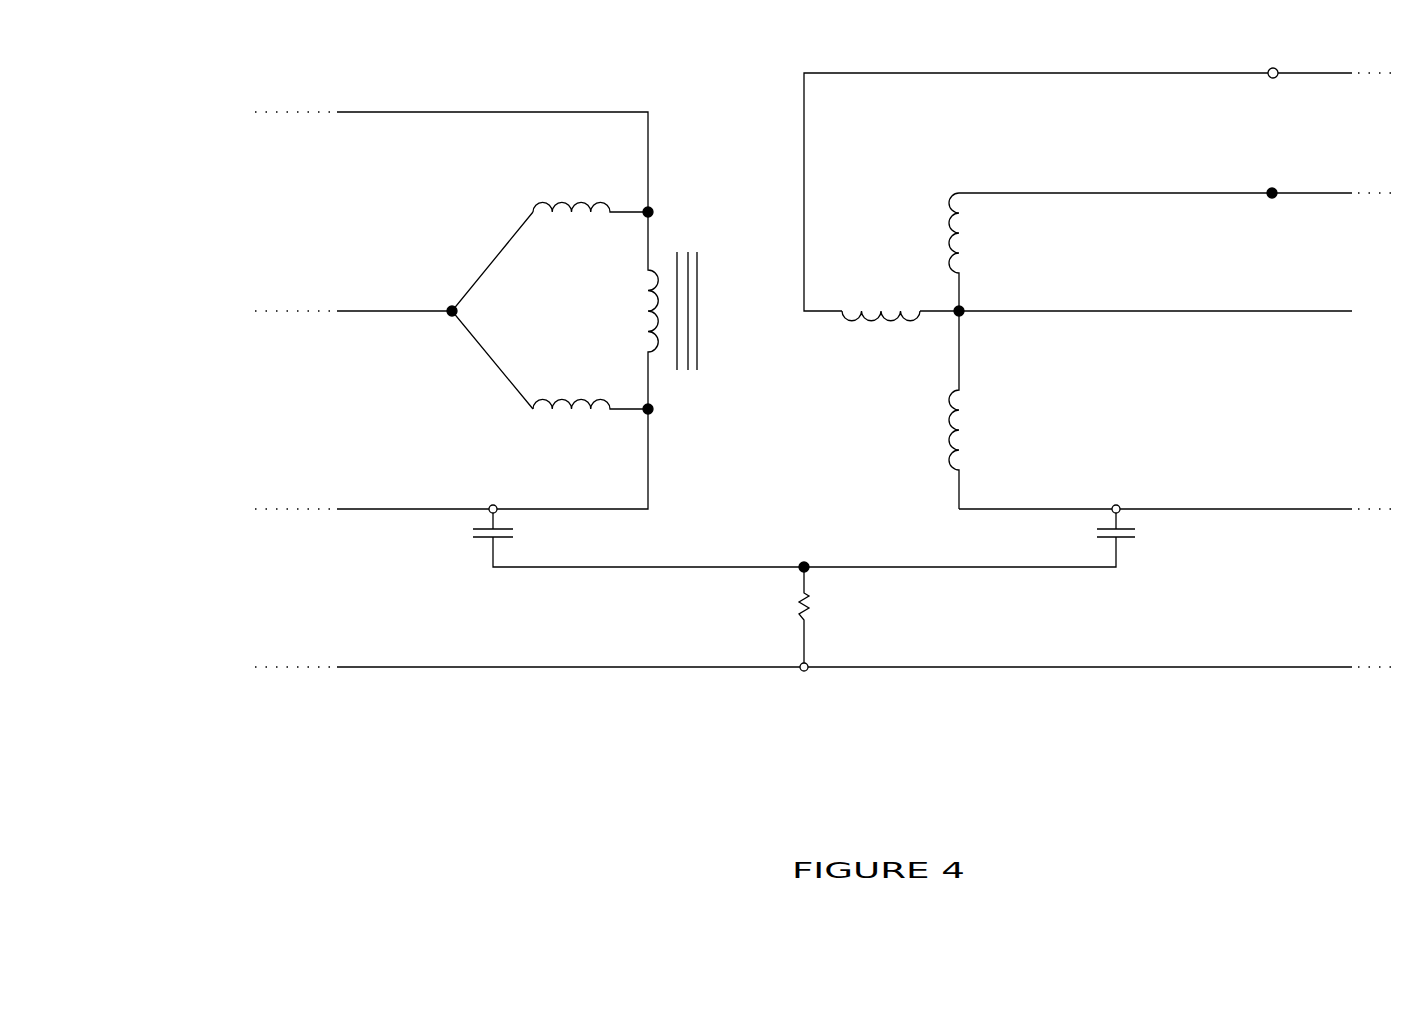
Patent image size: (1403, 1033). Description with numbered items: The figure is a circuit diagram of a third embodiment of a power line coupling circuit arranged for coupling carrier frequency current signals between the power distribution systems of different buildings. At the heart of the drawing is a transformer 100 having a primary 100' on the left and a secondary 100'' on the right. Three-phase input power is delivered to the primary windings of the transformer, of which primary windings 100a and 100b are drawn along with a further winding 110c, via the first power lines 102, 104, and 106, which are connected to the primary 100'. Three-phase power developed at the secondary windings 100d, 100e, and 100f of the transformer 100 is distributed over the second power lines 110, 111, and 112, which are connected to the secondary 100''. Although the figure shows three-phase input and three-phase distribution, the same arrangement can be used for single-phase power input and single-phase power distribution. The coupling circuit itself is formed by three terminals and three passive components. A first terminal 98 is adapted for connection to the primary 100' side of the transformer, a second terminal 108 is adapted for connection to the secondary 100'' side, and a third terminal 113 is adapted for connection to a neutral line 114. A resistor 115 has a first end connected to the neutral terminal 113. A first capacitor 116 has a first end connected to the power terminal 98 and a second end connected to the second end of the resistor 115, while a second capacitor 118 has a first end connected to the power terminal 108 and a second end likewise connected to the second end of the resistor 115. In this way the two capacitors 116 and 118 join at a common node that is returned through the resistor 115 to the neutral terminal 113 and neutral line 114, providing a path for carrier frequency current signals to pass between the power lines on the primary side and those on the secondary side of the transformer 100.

The first terminal 98 is at (496, 497).
The transformer 100 is at (740, 275).
The primary 100' is at (550, 296).
The secondary 100'' is at (938, 351).
The primary winding 100a is at (542, 191).
The primary winding 100b is at (586, 423).
The secondary winding 100d is at (971, 429).
The secondary winding 100e is at (884, 289).
The secondary winding 100f is at (969, 261).
The first power line 102 is at (434, 104).
The first power line 104 is at (376, 301).
The first power line 106 is at (384, 500).
The second terminal 108 is at (1127, 497).
The second power line 110 is at (964, 61).
The tertiary winding 110c is at (660, 354).
The second power line 111 is at (1302, 206).
The second power line 112 is at (1245, 497).
The third terminal 113 is at (795, 680).
The neutral line 114 is at (471, 680).
The resistor 115 is at (826, 609).
The first capacitor 116 is at (524, 529).
The second capacitor 118 is at (1147, 529).